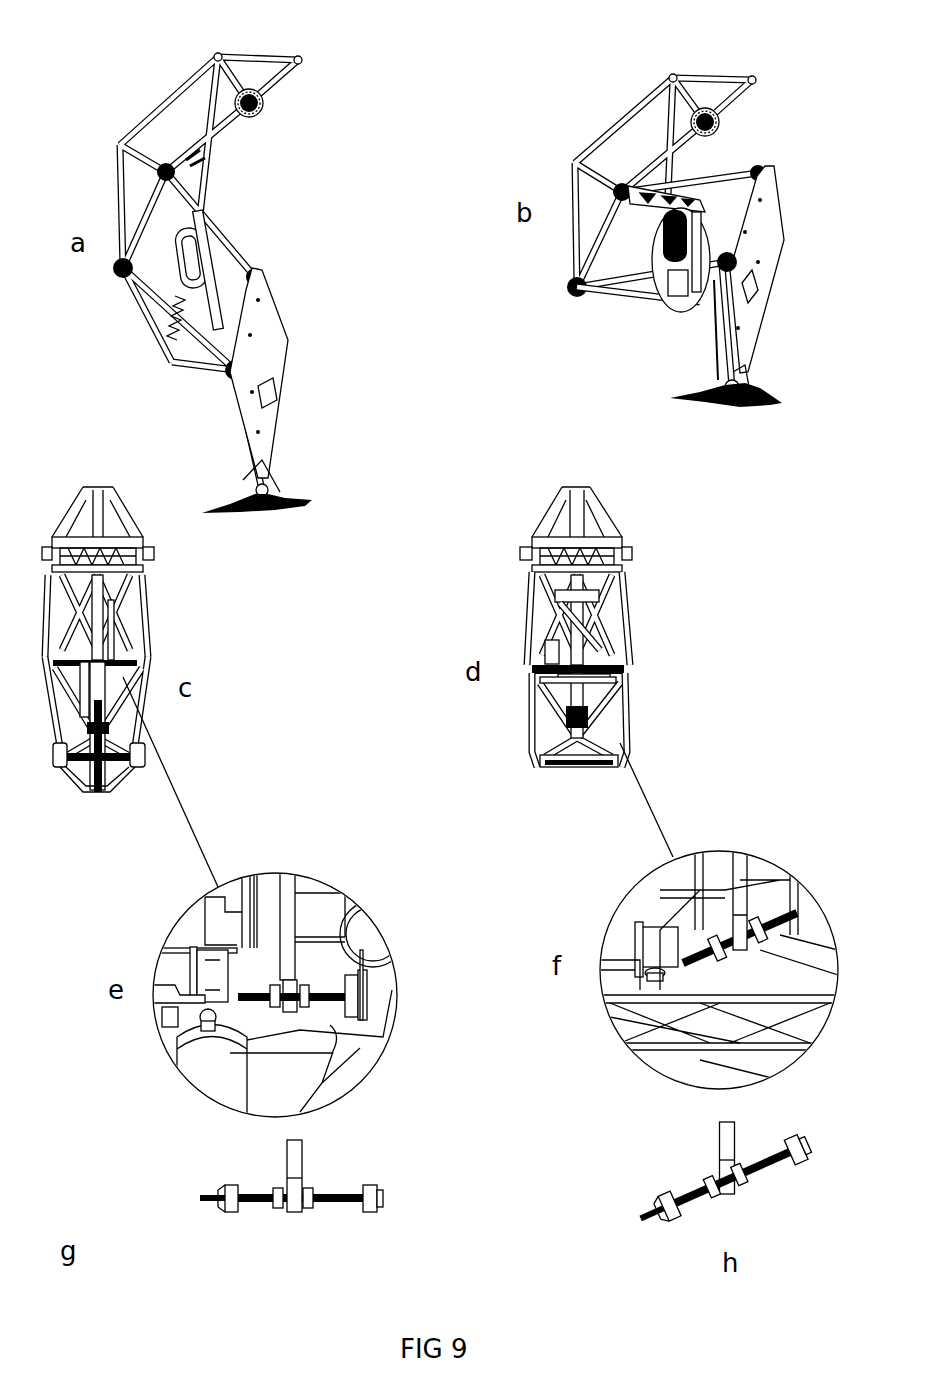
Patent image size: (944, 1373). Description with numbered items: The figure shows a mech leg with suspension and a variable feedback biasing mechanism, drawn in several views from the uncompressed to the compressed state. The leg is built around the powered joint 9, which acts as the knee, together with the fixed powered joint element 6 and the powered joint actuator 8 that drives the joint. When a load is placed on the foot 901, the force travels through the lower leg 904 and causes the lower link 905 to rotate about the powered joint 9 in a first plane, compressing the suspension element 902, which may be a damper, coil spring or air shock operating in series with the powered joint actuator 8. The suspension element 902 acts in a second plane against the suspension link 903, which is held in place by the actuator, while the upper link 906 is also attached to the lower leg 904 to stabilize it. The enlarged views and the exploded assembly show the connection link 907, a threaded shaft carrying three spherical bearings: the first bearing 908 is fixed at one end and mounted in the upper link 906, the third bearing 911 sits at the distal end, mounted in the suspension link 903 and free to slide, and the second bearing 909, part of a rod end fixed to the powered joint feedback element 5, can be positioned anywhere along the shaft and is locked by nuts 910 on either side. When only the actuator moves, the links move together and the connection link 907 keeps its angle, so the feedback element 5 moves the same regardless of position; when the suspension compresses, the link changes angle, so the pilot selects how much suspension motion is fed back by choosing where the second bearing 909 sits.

The powered joint feedback element 5 is at (194, 170).
The fixed powered joint element 6 is at (605, 138).
The powered joint actuator 8 is at (670, 125).
The powered joint 9 is at (560, 297).
The foot 901 is at (746, 408).
The suspension element 902 is at (663, 313).
The suspension link 903 is at (703, 205).
The lower leg 904 is at (755, 238).
The lower link 905 is at (617, 296).
The upper link 906 is at (702, 183).
The connection link 907 is at (200, 1197).
The first bearing 908 is at (369, 1215).
The second bearing 909 is at (304, 1157).
The nuts 910 is at (307, 1213).
The third bearing 911 is at (232, 1213).